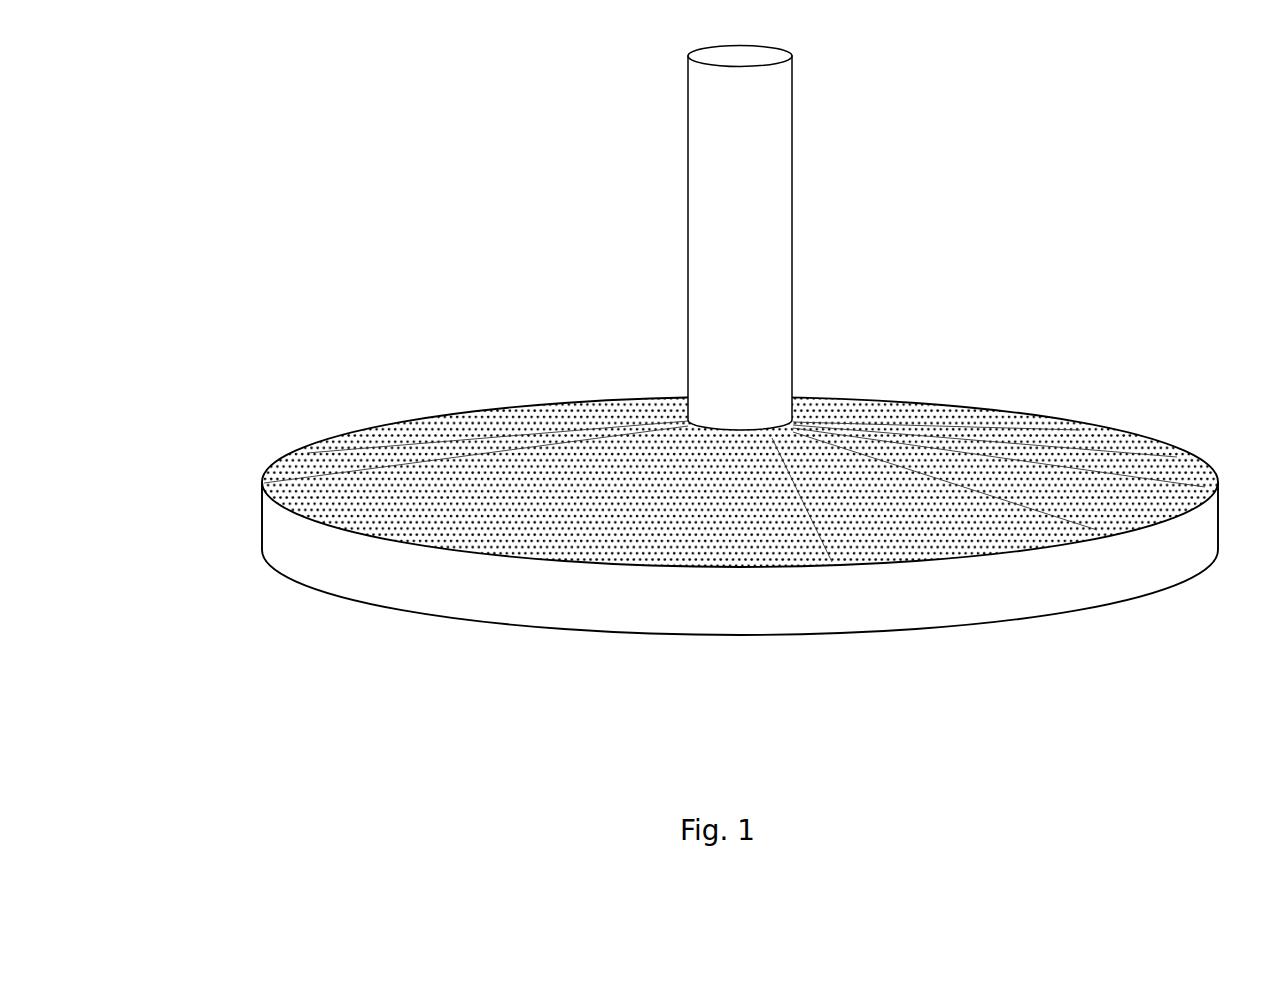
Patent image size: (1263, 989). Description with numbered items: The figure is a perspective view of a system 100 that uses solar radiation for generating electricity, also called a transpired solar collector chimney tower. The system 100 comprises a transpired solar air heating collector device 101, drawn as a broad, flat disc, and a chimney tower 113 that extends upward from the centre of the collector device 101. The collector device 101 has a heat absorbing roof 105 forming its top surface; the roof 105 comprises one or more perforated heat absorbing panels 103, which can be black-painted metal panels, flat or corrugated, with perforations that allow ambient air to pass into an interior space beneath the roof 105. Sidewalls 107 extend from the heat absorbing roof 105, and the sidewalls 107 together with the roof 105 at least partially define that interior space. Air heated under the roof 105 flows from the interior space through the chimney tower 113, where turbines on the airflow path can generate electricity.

The system 100 is at (693, 394).
The transpired solar air heating collector device 101 is at (738, 530).
The perforated heat absorbing panel 103 is at (322, 447).
The heat absorbing roof 105 is at (533, 487).
The sidewall 107 is at (752, 611).
The chimney tower 113 is at (688, 333).